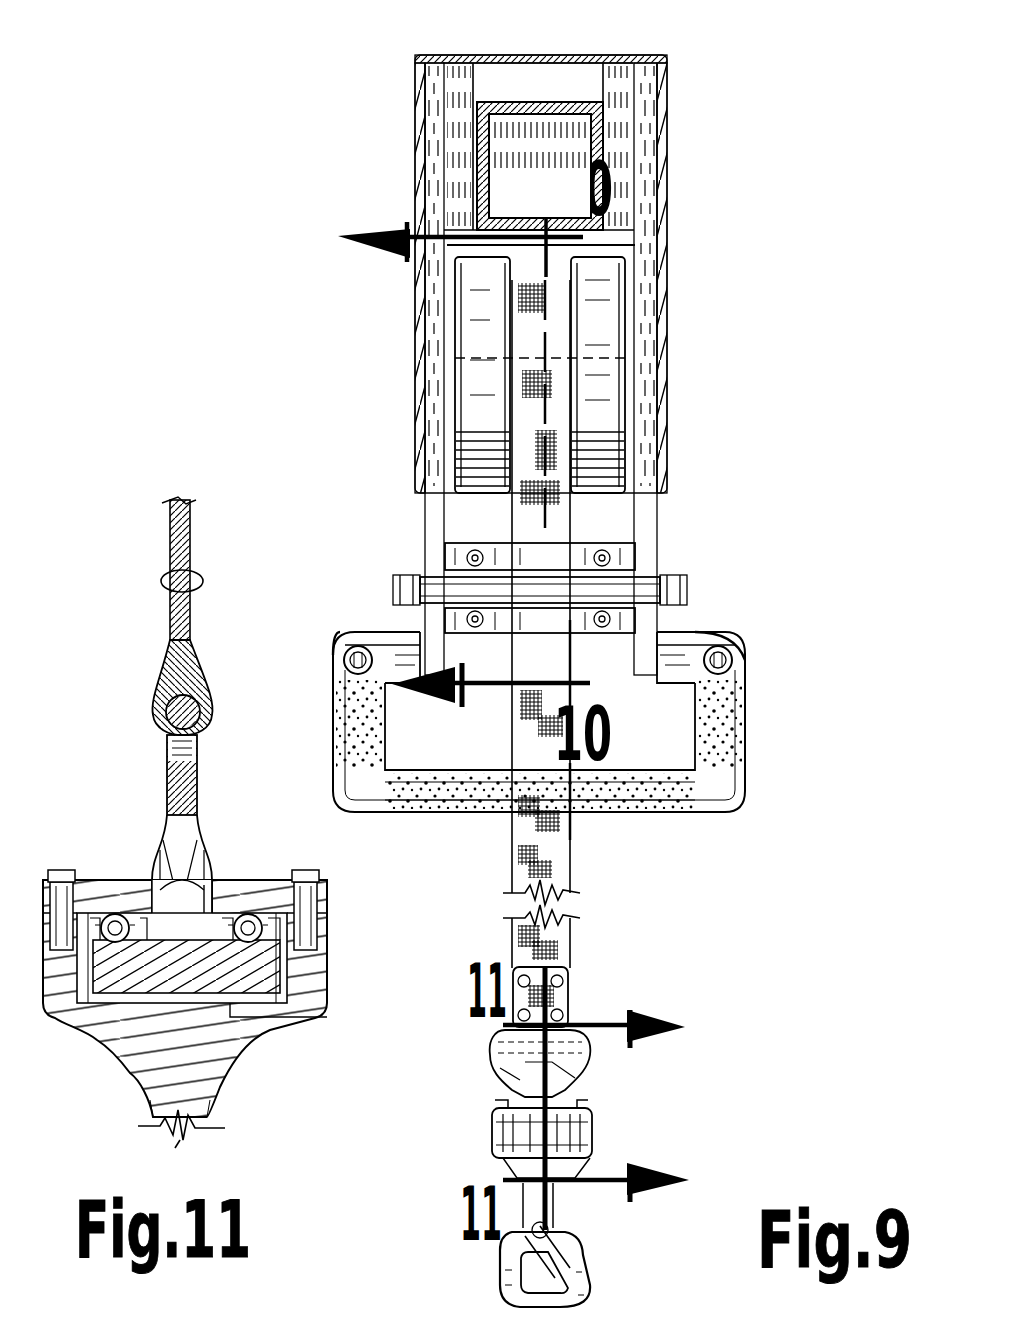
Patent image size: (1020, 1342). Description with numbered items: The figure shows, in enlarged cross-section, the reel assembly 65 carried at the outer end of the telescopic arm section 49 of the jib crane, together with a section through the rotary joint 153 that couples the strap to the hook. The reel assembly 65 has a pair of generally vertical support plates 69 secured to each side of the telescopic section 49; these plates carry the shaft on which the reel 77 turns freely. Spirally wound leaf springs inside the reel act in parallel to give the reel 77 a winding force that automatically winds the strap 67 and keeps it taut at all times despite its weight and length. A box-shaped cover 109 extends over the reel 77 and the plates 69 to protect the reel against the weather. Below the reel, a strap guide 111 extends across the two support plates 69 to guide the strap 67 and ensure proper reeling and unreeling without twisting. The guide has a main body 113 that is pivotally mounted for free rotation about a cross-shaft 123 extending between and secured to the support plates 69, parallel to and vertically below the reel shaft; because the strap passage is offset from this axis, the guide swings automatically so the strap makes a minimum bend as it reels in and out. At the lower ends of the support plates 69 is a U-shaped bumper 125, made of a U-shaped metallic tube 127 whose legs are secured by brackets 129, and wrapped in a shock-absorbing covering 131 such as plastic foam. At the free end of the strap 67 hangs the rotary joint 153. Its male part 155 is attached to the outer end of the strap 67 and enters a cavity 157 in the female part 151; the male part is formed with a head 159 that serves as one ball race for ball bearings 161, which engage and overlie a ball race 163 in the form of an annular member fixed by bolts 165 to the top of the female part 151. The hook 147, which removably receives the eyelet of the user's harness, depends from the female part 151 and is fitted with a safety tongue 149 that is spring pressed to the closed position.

In FIG. 9, the telescopic arm section 49 is at (536, 100).
In FIG. 9, the reel assembly 65 is at (690, 246).
In FIG. 9, the strap 67 is at (555, 840).
In FIG. 11, the strap 67 is at (170, 533).
In FIG. 9, the support plates 69 is at (415, 493).
In FIG. 9, the reel 77 is at (612, 330).
In FIG. 9, the box-shaped cover 109 is at (497, 60).
In FIG. 9, the strap guide 111 is at (625, 530).
In FIG. 9, the main body 113 is at (660, 625).
In FIG. 9, the cross-shaft 123 is at (688, 590).
In FIG. 9, the U-shaped bumper 125 is at (770, 735).
In FIG. 9, the U-shaped metallic tube 127 is at (734, 693).
In FIG. 9, the brackets 129 is at (740, 650).
In FIG. 9, the covering 131 is at (688, 815).
In FIG. 9, the hook 147 is at (590, 1290).
In FIG. 9, the safety tongue 149 is at (556, 1247).
In FIG. 9, the female part 151 is at (490, 1140).
In FIG. 11, the female part 151 is at (160, 1077).
In FIG. 9, the rotary joint 153 is at (630, 1125).
In FIG. 11, the rotary joint 153 is at (216, 1096).
In FIG. 9, the male part 155 is at (565, 1085).
In FIG. 11, the male part 155 is at (167, 805).
In FIG. 11, the cavity 157 is at (230, 1005).
In FIG. 11, the head 159 is at (243, 965).
In FIG. 11, the ball bearings 161 is at (258, 878).
In FIG. 9, the ball race 163 is at (490, 1120).
In FIG. 11, the ball race 163 is at (218, 878).
In FIG. 11, the bolts 165 is at (57, 868).